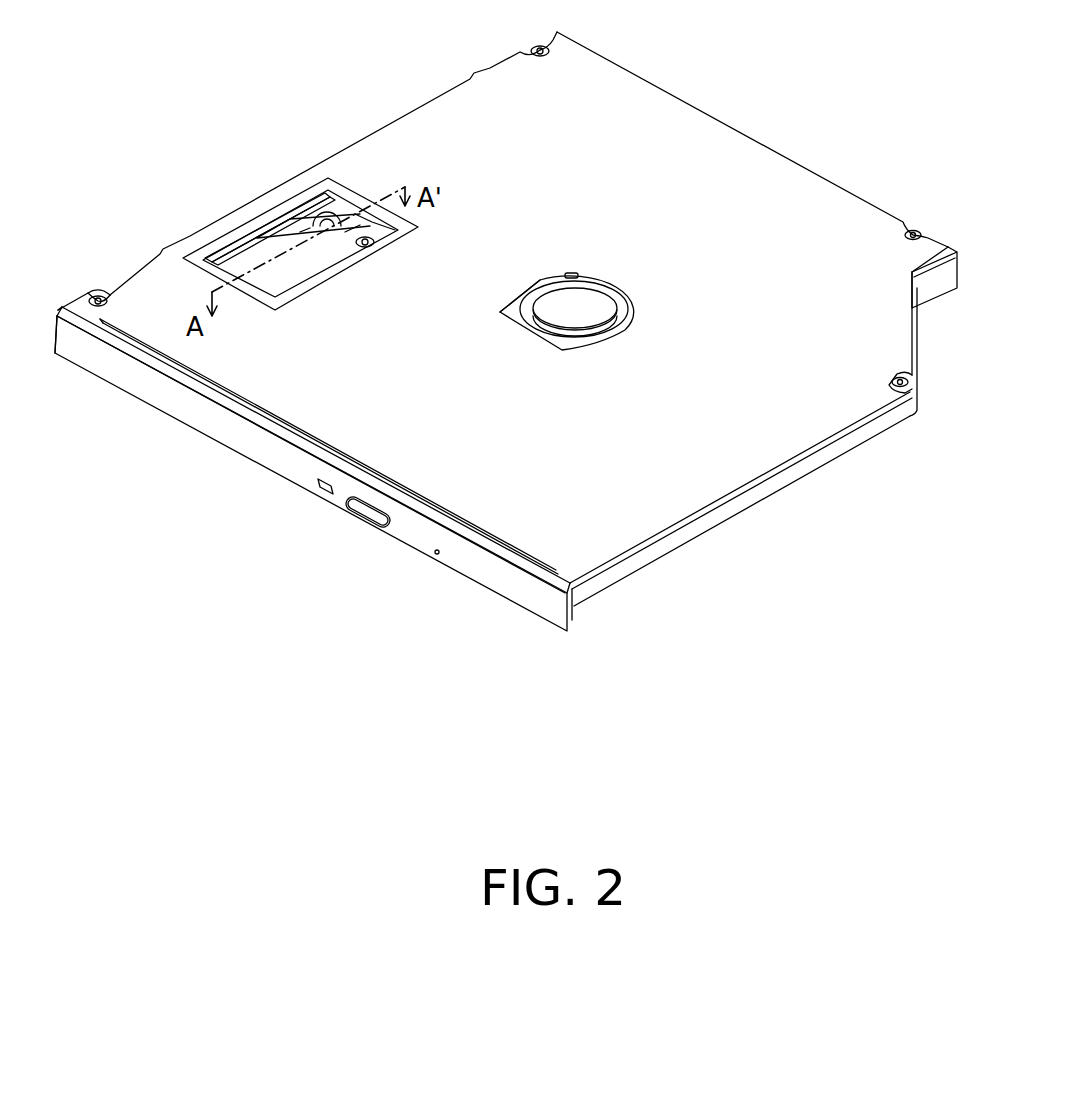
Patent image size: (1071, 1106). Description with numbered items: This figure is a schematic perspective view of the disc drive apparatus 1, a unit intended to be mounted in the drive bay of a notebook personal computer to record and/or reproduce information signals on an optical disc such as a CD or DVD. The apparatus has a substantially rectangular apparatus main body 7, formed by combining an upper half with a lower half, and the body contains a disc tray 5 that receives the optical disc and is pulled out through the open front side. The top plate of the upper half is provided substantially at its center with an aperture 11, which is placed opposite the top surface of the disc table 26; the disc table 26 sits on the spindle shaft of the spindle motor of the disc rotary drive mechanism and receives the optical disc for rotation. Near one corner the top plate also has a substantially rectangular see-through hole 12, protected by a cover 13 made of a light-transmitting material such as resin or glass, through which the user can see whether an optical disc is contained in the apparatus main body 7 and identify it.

The disc drive apparatus 1 is at (364, 118).
The disc tray 5 is at (251, 266).
The apparatus main body 7 is at (740, 467).
The aperture 11 is at (578, 277).
The see-through hole 12 is at (270, 226).
The cover 13 is at (303, 212).
The disc table 26 is at (601, 307).